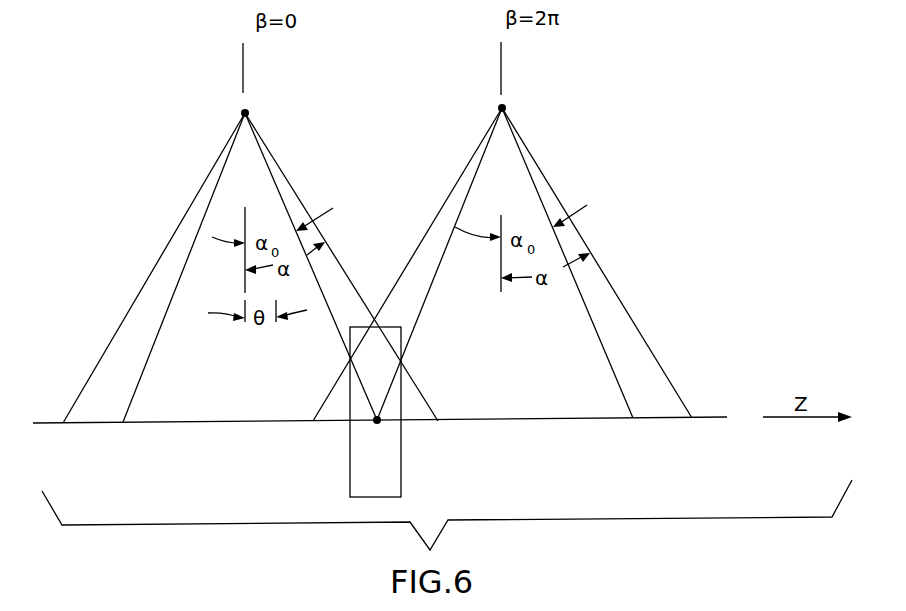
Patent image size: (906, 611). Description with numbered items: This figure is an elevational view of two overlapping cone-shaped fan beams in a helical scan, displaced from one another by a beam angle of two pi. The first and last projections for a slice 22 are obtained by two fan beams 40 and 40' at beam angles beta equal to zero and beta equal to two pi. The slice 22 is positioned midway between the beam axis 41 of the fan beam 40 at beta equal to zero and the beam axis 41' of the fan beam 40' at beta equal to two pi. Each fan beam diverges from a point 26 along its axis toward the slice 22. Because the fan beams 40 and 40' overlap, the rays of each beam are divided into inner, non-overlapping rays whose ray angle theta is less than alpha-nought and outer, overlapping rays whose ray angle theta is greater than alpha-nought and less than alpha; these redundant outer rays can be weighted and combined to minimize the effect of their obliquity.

The beam axis 41 is at (268, 68).
The beam axis 41' is at (540, 68).
The light source focal point 26 is at (250, 110).
The fan beam 40 is at (341, 267).
The fan beam 40' is at (597, 263).
The slice 22 is at (402, 484).